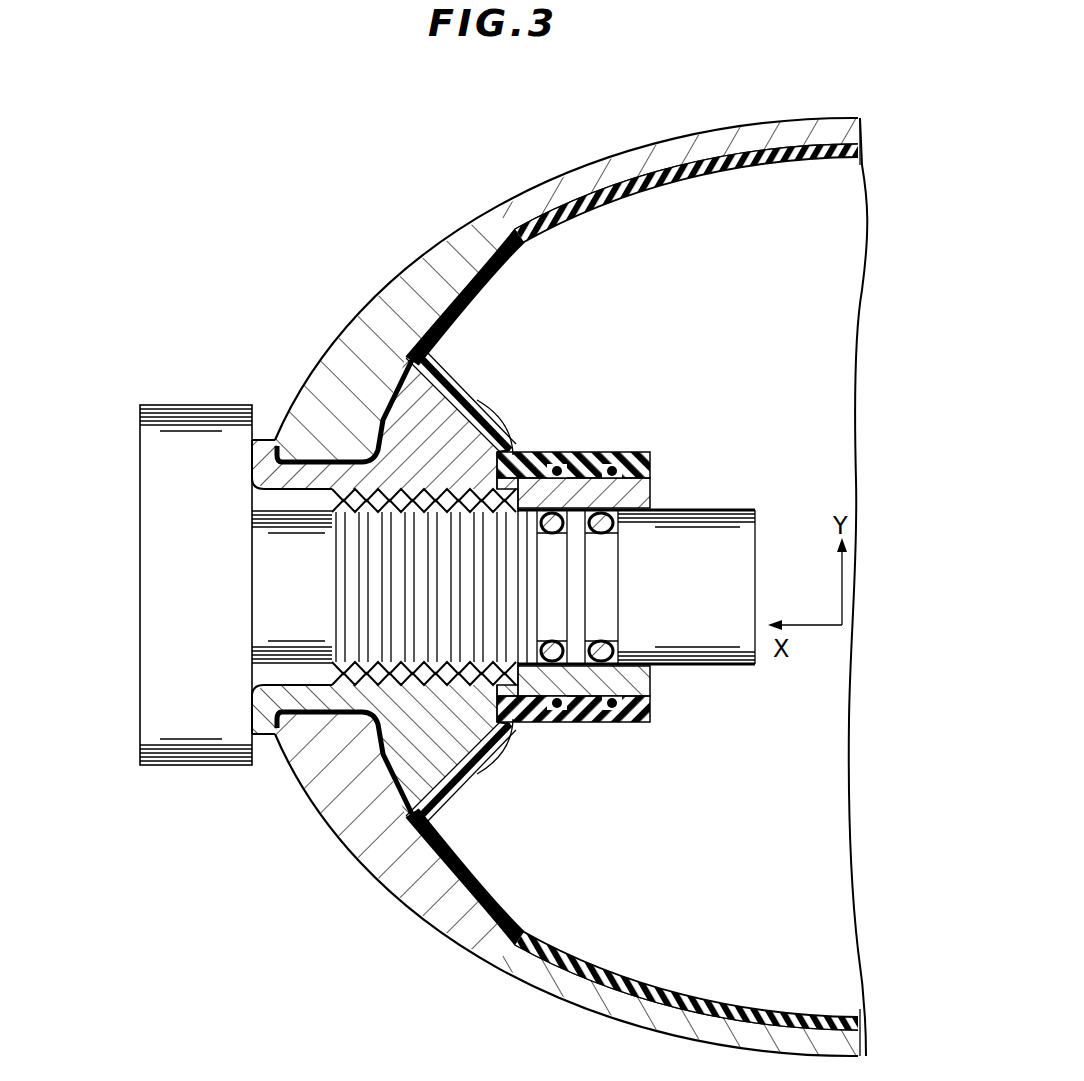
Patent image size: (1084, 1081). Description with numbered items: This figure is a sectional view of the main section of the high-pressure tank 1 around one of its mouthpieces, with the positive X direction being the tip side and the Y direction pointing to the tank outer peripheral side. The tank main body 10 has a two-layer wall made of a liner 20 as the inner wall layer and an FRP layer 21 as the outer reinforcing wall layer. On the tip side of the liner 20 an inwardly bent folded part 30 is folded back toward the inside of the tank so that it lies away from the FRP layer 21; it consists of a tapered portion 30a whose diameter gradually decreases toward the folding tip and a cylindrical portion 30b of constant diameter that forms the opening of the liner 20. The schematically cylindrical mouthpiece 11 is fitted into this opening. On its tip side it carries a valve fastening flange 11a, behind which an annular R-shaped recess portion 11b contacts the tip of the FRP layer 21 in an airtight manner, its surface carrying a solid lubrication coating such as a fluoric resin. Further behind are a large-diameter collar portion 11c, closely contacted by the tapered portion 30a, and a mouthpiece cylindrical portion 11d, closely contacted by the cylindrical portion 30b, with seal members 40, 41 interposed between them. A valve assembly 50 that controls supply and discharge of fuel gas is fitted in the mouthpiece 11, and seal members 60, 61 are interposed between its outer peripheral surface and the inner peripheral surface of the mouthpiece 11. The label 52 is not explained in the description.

The high-pressure tank 1 is at (298, 270).
The tank main body 10 is at (549, 174).
The liner 20 is at (530, 237).
The FRP layer 21 is at (367, 298).
The liner contact surface 52 is at (385, 425).
The valve assembly 50 is at (157, 397).
The mouthpiece 11 is at (262, 438).
The valve fastening flange 11a is at (244, 447).
The recess portion 11b is at (310, 455).
The collar portion 11c is at (450, 398).
The mouthpiece cylindrical portion 11d is at (523, 452).
The folded part 30 is at (648, 446).
The tapered portion 30a is at (478, 405).
The cylindrical portion 30b is at (590, 452).
The seal member 40 is at (558, 455).
The seal member 41 is at (610, 455).
The seal member 60 is at (550, 535).
The seal member 61 is at (617, 522).